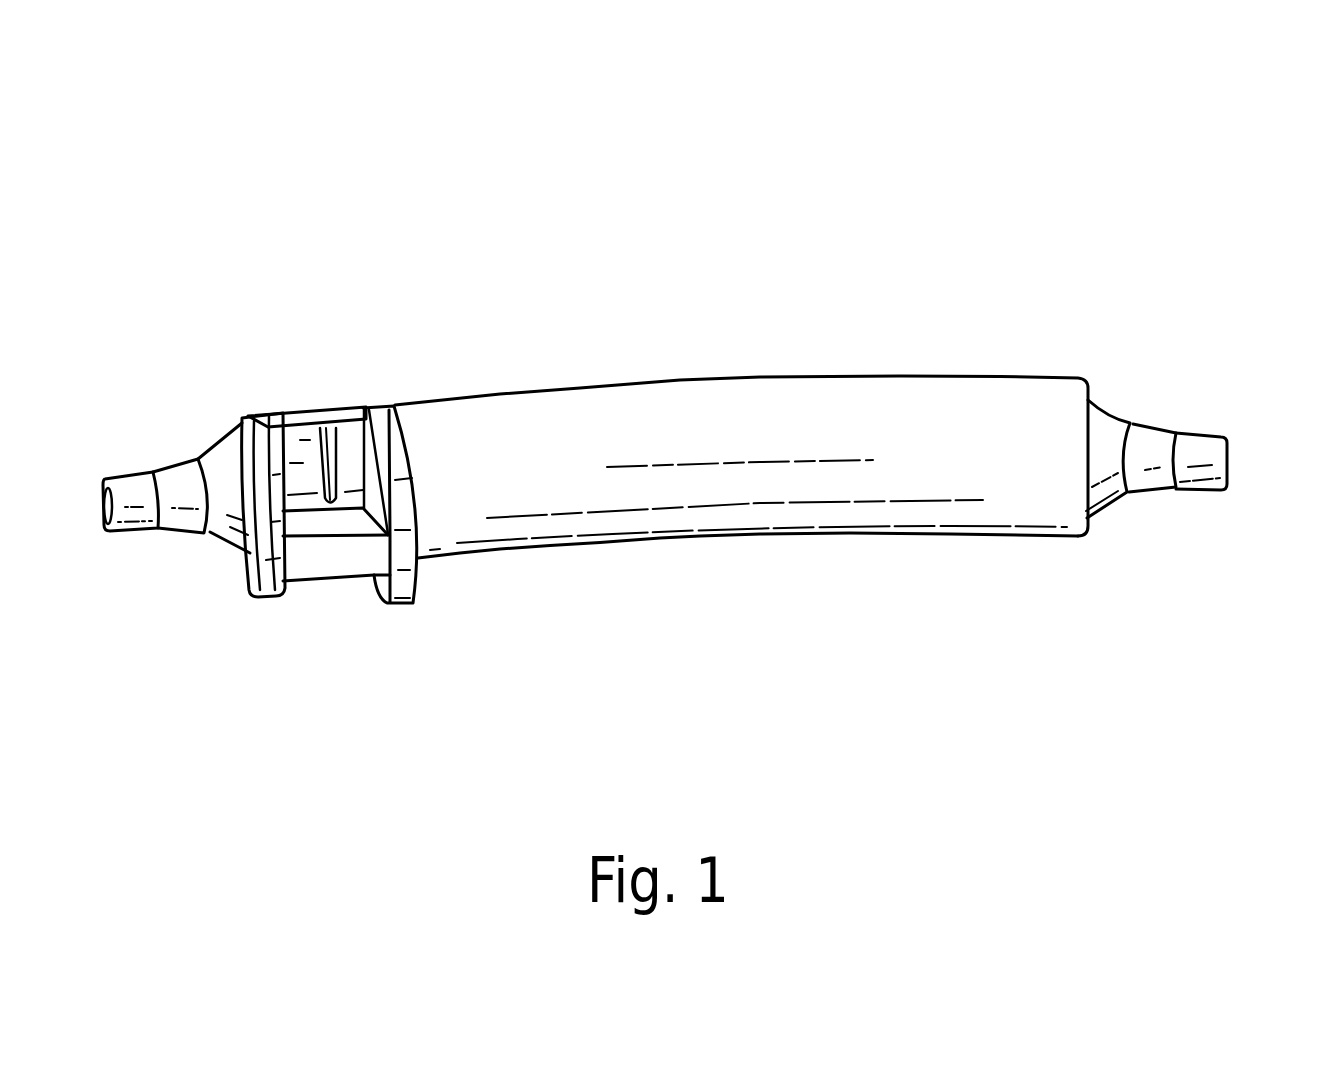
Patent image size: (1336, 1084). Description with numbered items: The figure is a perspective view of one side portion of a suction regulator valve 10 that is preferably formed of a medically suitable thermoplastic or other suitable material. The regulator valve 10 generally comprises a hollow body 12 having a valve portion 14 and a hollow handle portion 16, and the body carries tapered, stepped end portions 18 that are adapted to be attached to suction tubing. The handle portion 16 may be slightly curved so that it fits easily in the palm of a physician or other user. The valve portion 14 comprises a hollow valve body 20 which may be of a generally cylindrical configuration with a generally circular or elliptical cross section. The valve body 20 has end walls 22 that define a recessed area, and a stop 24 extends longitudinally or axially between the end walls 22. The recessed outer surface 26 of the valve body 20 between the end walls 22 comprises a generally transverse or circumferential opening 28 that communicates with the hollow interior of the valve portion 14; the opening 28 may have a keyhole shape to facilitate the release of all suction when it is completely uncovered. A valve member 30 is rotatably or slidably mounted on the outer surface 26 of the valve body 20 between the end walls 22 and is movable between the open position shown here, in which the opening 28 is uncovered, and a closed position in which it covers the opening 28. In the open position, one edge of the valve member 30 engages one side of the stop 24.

The regulator valve 10 is at (142, 260).
The hollow body 12 is at (603, 545).
The valve portion 14 is at (410, 607).
The hollow handle portion 16 is at (687, 540).
The tapered, stepped end portions 18 is at (178, 477).
The hollow valve body 20 is at (263, 595).
The end walls 22 is at (368, 530).
The stop 24 is at (358, 558).
The recessed outer surface 26 is at (387, 405).
The opening 28 is at (345, 459).
The valve member 30 is at (330, 405).